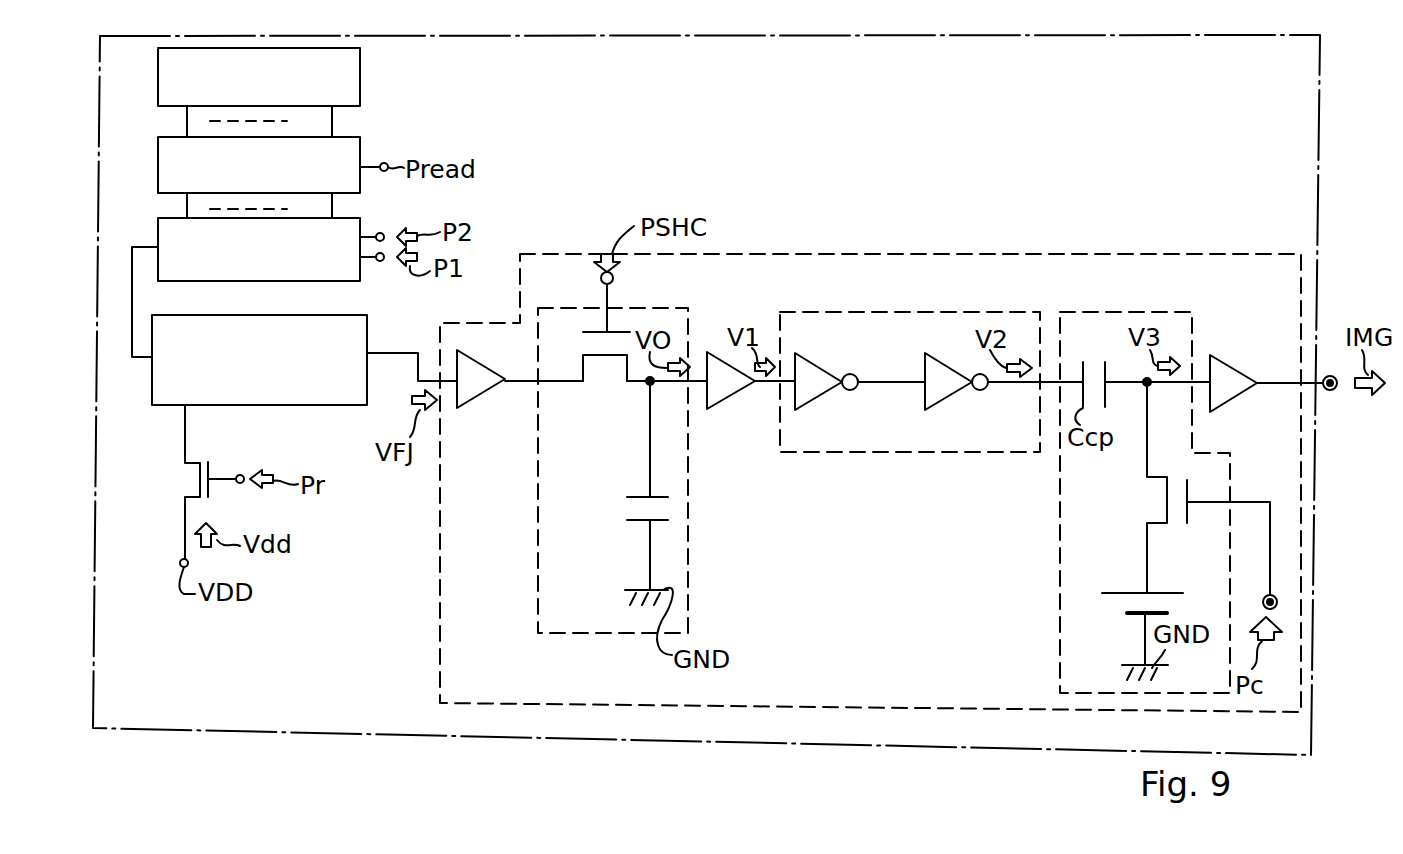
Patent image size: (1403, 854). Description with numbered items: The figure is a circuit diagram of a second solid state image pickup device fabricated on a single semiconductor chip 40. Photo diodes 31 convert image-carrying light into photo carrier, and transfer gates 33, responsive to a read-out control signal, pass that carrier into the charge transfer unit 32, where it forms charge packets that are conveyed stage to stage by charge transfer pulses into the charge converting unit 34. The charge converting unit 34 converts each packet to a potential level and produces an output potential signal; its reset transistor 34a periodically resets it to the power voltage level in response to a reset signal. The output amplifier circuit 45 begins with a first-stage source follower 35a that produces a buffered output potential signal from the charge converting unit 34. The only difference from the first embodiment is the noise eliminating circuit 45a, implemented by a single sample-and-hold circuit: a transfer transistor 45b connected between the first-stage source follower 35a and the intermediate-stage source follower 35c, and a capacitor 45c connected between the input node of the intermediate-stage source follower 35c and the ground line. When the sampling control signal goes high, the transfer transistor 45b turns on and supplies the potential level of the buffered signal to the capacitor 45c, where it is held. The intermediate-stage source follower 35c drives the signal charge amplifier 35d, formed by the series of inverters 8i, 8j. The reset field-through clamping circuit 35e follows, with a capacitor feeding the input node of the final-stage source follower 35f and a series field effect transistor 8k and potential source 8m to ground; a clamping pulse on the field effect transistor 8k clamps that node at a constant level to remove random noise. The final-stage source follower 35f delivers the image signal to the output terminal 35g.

The photo diodes 31 is at (360, 72).
The transfer gates 33 is at (360, 143).
The charge transfer unit 32 is at (317, 281).
The charge converting unit 34 is at (303, 405).
The reset transistor 34a is at (210, 470).
The first-stage source follower 35a is at (480, 395).
The intermediate-stage source follower 35c is at (720, 403).
The signal charge amplifier 35d is at (863, 452).
The reset field-through clamping circuit 35e is at (1058, 580).
The final-stage source follower 35f is at (1243, 343).
The output terminal 35g is at (1333, 390).
The semiconductor chip 40 is at (437, 738).
The output amplifier circuit 45 is at (1106, 225).
The noise eliminating circuit 45a is at (688, 550).
The transfer transistor 45b is at (603, 357).
The capacitor 45c is at (632, 522).
The inverter 8i is at (818, 346).
The inverter 8j is at (925, 367).
The field effect transistor 8k is at (1165, 500).
The potential source 8m is at (1155, 594).